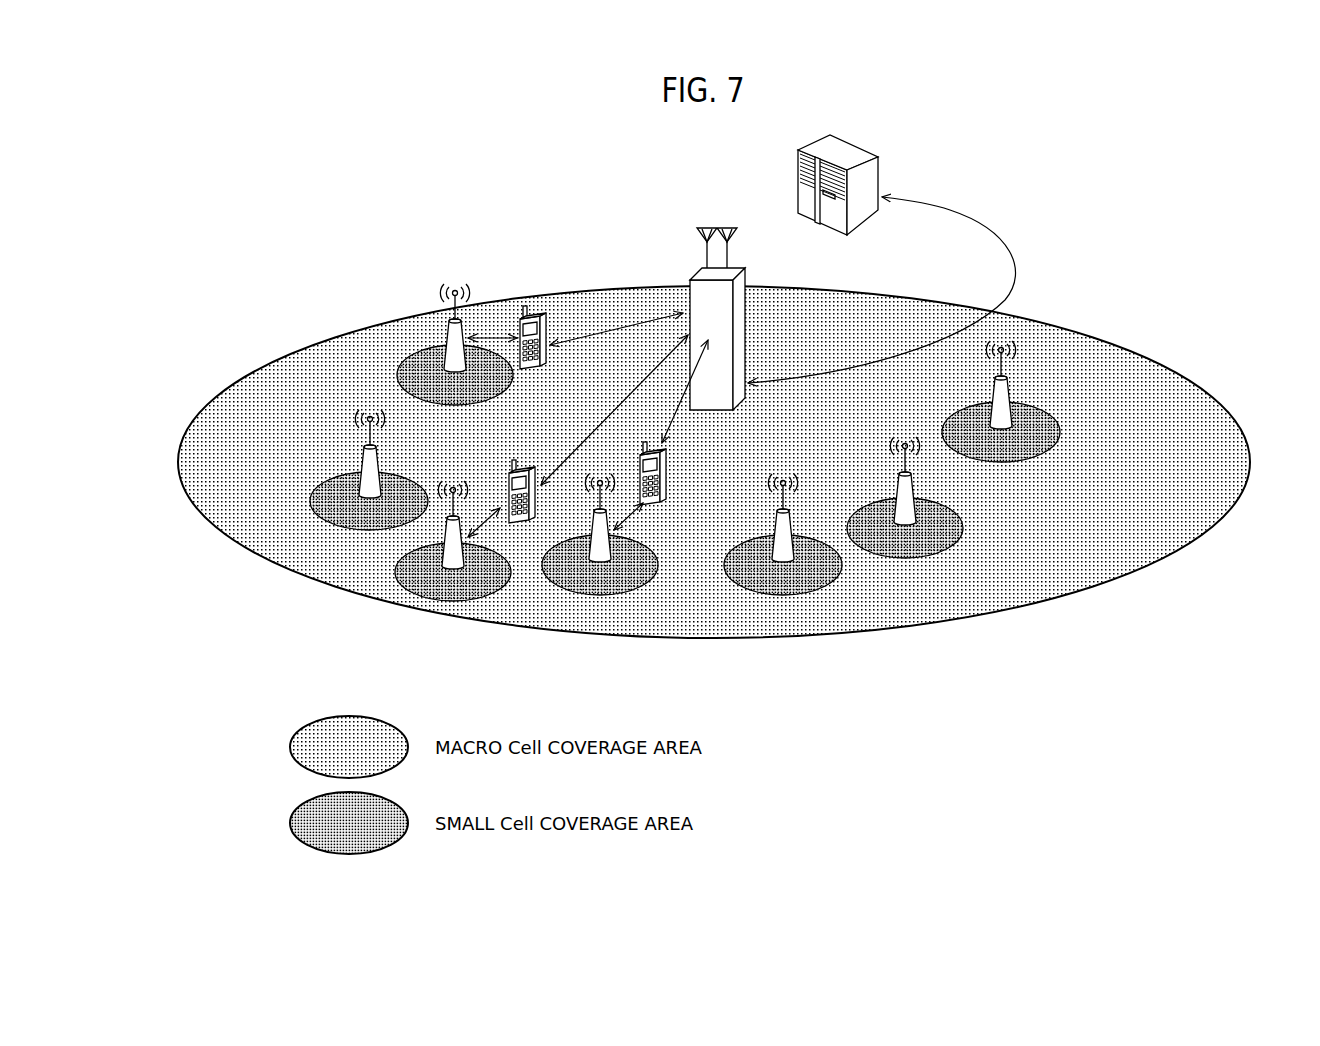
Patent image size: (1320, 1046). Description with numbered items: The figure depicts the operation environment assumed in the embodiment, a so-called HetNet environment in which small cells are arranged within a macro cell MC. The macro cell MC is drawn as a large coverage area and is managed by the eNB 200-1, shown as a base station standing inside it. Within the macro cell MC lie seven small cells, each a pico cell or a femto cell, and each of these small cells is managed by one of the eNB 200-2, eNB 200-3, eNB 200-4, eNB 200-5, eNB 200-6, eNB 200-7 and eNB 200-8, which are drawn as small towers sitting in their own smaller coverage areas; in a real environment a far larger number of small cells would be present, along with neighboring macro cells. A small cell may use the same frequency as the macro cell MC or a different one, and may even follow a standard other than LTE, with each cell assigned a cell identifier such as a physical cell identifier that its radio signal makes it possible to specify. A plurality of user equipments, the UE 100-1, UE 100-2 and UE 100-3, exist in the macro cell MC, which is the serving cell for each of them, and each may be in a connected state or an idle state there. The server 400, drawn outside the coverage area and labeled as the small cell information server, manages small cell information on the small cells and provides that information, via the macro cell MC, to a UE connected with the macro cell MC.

The macro cell MC is at (1133, 350).
The eNB 200-1 is at (692, 271).
The eNB 200-2 is at (443, 339).
The eNB 200-3 is at (310, 473).
The eNB 200-4 is at (407, 543).
The eNB 200-5 is at (546, 545).
The eNB 200-6 is at (724, 565).
The eNB 200-7 is at (923, 490).
The eNB 200-8 is at (1040, 397).
The UE 100-1 is at (547, 306).
The UE 100-2 is at (516, 523).
The UE 100-3 is at (667, 490).
The server 400 is at (862, 148).